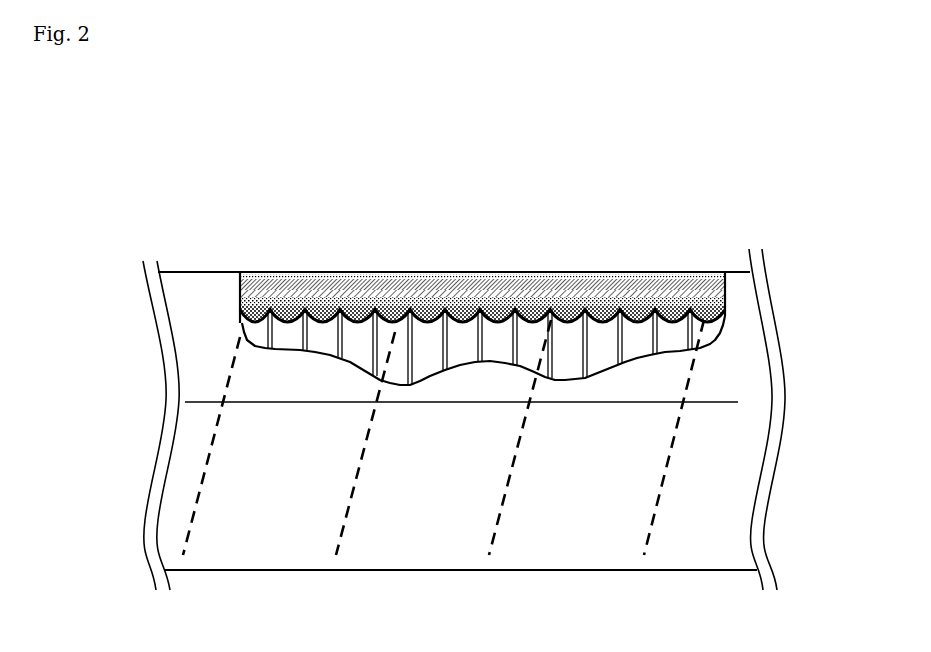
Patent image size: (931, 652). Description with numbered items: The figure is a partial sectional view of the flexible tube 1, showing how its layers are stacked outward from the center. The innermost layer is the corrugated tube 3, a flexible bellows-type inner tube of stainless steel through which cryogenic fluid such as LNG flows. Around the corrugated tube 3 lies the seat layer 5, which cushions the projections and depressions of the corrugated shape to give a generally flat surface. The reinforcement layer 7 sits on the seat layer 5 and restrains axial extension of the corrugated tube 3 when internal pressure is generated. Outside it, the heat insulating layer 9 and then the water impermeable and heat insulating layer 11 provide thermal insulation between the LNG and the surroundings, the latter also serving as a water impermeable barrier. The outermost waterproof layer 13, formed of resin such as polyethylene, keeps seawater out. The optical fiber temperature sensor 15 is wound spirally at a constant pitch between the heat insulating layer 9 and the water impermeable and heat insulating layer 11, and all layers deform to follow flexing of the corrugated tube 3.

The flexible tube 1 is at (545, 208).
The corrugated tube 3 is at (689, 271).
The seat layer 5 is at (603, 270).
The reinforcement layer 7 is at (578, 272).
The heat insulating layer 9 is at (283, 272).
The water impermeable and heat insulating layer 11 is at (390, 272).
The waterproof layer 13 is at (450, 272).
The optical fiber temperature sensor 15 is at (550, 272).